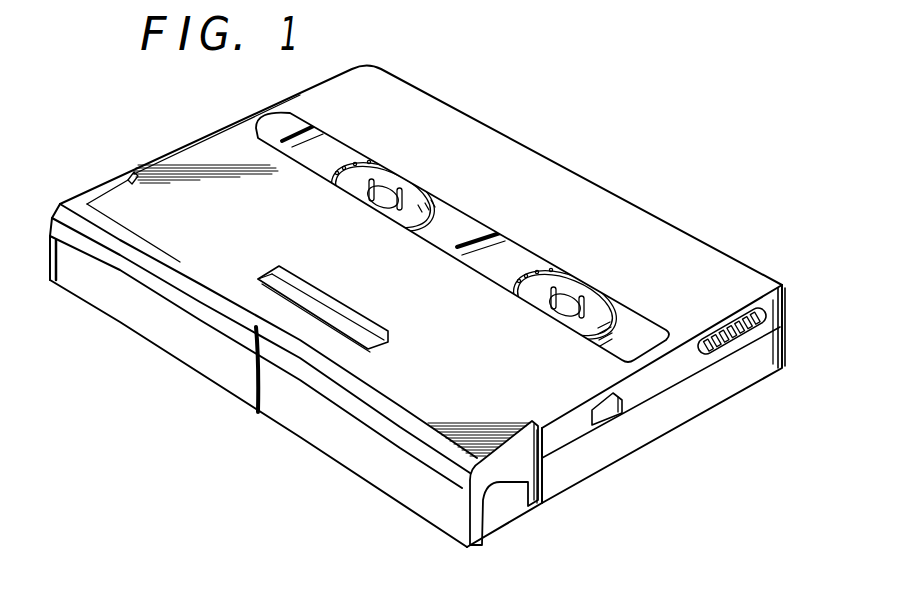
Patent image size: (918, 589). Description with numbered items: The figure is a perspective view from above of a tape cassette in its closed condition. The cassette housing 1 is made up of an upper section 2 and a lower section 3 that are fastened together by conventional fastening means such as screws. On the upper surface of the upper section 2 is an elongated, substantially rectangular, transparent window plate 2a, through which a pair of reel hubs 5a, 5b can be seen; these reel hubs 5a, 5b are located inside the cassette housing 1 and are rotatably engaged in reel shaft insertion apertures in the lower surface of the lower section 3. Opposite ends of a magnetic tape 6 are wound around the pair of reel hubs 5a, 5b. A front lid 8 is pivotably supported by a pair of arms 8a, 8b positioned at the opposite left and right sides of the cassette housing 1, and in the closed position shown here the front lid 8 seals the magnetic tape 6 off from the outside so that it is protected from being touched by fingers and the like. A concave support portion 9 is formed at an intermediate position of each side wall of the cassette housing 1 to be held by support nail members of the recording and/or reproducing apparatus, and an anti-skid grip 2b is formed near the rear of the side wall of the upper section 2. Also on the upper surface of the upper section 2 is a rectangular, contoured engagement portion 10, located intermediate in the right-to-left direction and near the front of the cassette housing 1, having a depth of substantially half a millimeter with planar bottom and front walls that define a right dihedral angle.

The cassette housing 1 is at (793, 385).
The upper section 2 is at (779, 315).
The lower section 3 is at (757, 372).
The transparent window plate 2a is at (636, 320).
The anti-skid grip 2b is at (737, 331).
The reel hub 5a is at (352, 172).
The reel hub 5b is at (515, 270).
The magnetic tape 6 is at (460, 216).
The front lid 8 is at (213, 370).
The arm 8a is at (88, 197).
The arm 8b is at (508, 473).
The concave support portion 9 is at (618, 418).
The contoured engagement portion 10 is at (330, 316).